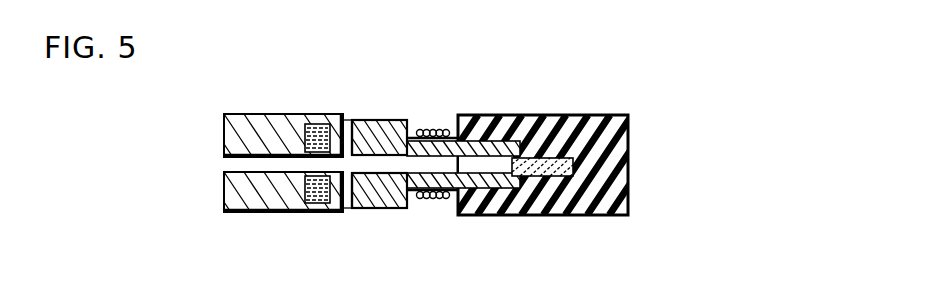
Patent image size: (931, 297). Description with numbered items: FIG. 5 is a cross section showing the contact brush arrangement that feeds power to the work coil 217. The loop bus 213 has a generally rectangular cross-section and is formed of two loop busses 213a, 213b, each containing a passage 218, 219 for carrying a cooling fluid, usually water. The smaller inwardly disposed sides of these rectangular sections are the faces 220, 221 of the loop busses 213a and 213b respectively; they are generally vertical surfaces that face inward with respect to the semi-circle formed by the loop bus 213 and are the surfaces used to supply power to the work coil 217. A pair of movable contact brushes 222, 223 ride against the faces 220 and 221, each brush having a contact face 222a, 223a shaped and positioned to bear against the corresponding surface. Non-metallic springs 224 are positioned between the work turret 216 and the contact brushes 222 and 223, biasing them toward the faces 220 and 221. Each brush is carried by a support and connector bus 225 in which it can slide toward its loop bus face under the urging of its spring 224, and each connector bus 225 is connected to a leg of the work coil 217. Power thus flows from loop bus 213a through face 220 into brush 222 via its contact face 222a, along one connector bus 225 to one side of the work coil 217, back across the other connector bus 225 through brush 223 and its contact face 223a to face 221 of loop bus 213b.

The loop bus 213 is at (236, 113).
The loop bus 213a is at (224, 143).
The loop bus 213b is at (224, 196).
The work turret 216 is at (625, 165).
The work coil 217 is at (540, 157).
The passage 218 is at (302, 122).
The passage 219 is at (307, 190).
The face 220 is at (356, 98).
The face 221 is at (346, 210).
The contact brush 222 is at (387, 120).
The contact face 222a is at (368, 120).
The contact brush 223 is at (400, 209).
The contact face 223a is at (354, 209).
The non-metallic spring 224 is at (433, 128).
The support and connector bus 225 is at (498, 143).